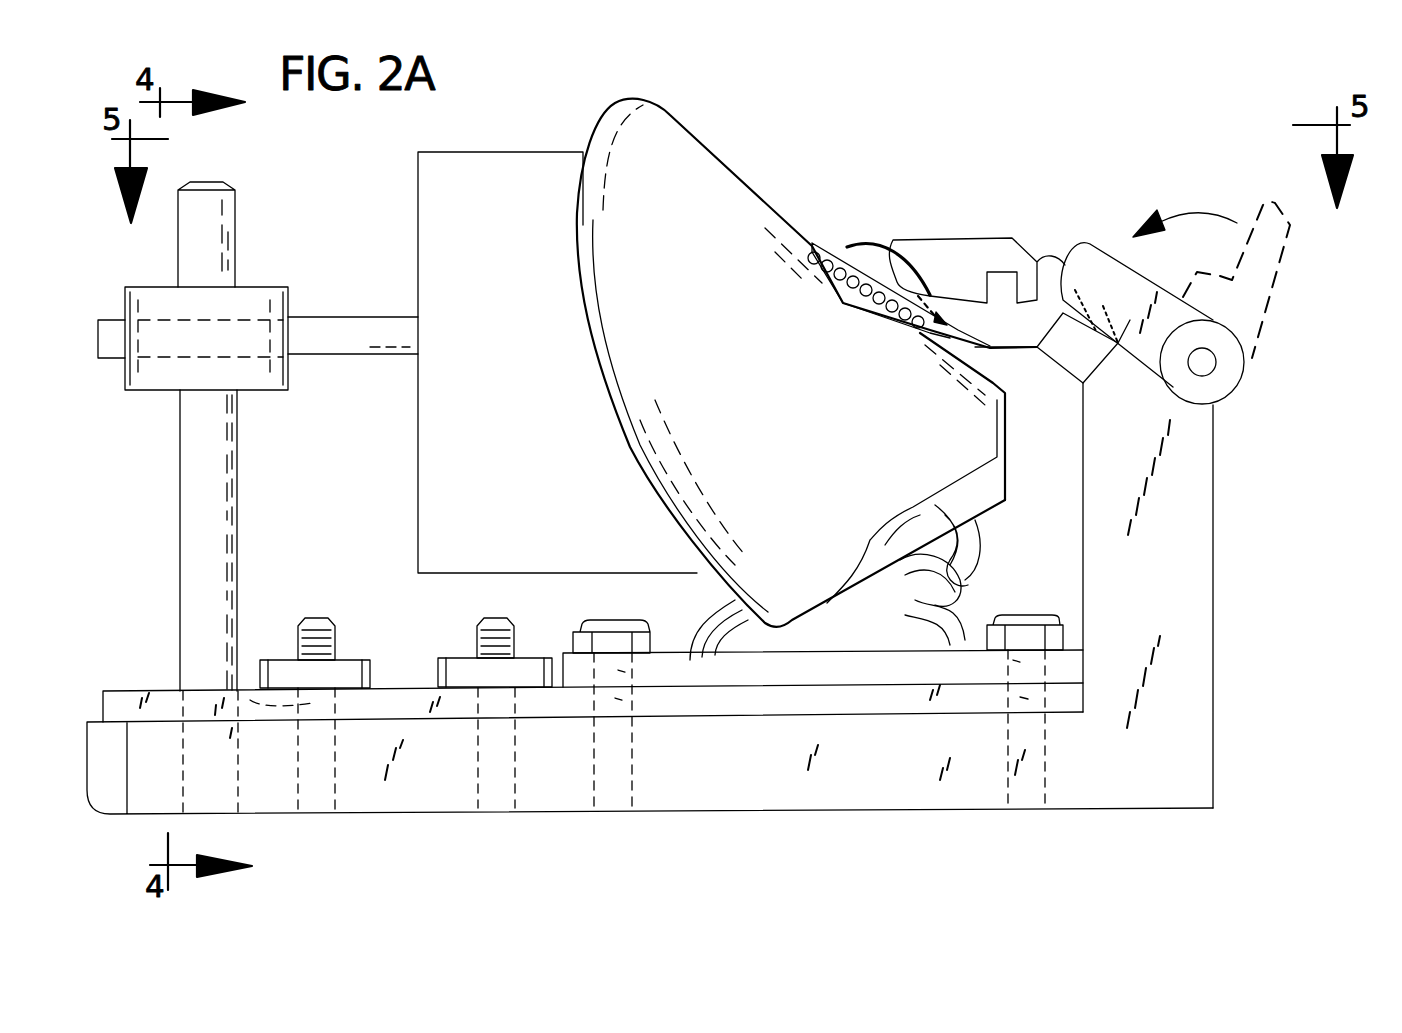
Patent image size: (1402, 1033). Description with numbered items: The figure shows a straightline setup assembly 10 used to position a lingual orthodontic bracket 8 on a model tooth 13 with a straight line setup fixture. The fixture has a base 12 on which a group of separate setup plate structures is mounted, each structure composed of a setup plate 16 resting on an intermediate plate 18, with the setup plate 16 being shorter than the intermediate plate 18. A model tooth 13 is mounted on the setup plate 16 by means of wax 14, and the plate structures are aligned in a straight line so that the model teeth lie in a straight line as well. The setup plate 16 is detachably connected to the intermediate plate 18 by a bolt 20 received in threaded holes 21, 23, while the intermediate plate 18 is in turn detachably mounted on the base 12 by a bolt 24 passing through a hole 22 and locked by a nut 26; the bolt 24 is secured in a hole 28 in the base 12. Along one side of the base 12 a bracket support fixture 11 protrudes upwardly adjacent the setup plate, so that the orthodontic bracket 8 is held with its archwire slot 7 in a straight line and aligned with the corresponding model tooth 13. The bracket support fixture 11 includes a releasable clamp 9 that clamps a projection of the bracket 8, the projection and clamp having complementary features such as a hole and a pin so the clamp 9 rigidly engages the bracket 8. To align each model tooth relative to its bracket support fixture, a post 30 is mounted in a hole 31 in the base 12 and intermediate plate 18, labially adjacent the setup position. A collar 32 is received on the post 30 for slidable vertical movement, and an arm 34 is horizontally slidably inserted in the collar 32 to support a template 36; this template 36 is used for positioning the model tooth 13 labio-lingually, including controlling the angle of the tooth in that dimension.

The archwire slot 7 is at (1000, 272).
The orthodontic bracket 8 is at (1082, 280).
The releasable clamp 9 is at (1120, 277).
The straightline setup assembly 10 is at (1218, 487).
The bracket support fixture 11 is at (1068, 352).
The base 12 is at (828, 775).
The model tooth 13 is at (700, 197).
The wax 14 is at (945, 580).
The setup plate 16 is at (665, 660).
The intermediate plate 18 is at (418, 705).
The bolt 20 is at (597, 617).
The threaded hole 21 is at (618, 670).
The hole 22 is at (250, 700).
The threaded hole 23 is at (615, 698).
The bolt 24 is at (336, 623).
The nut 26 is at (353, 660).
The hole 28 is at (318, 793).
The post 30 is at (218, 221).
The hole 31 is at (202, 722).
The collar 32 is at (270, 298).
The arm 34 is at (325, 346).
The template 36 is at (460, 455).